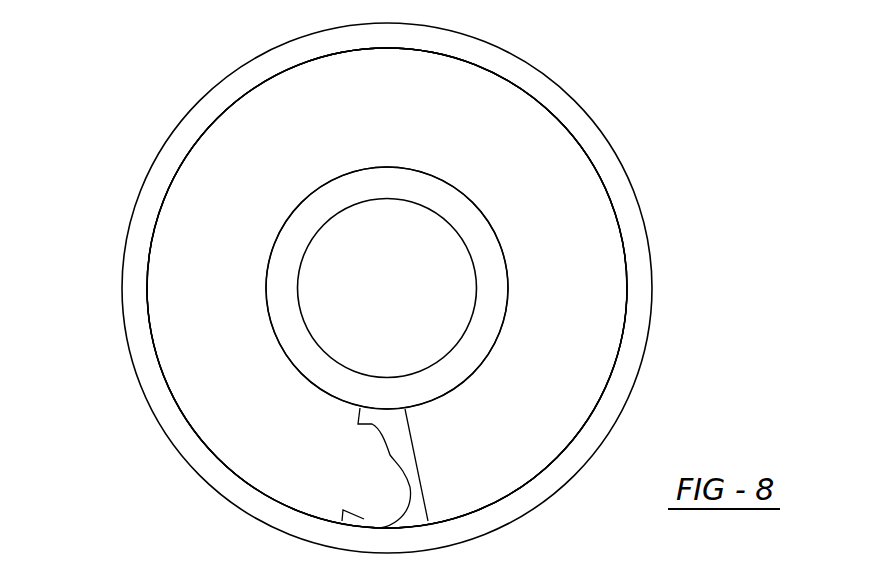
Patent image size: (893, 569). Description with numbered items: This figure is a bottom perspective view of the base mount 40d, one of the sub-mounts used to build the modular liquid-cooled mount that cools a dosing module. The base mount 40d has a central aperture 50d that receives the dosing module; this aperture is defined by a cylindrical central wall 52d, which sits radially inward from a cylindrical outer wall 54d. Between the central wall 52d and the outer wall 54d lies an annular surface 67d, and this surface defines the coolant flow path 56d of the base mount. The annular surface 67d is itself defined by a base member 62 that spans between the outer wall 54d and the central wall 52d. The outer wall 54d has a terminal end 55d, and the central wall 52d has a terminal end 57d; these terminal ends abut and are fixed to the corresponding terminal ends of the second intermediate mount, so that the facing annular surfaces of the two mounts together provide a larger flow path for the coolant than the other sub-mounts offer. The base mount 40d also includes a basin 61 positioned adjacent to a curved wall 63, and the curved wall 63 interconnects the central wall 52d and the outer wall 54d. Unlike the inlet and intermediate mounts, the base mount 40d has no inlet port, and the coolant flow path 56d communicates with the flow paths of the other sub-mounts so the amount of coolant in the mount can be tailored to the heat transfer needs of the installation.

The base mount 40d is at (392, 293).
The cylindrical outer wall 54d is at (430, 288).
The terminal end 55d is at (638, 325).
The coolant flow path 56d is at (399, 123).
The terminal end 57d is at (415, 273).
The cylindrical central wall 52d is at (495, 230).
The central aperture 50d is at (315, 342).
The base member 62 is at (212, 195).
The annular surface 67d is at (590, 345).
The basin 61 is at (353, 485).
The curved wall 63 is at (387, 453).